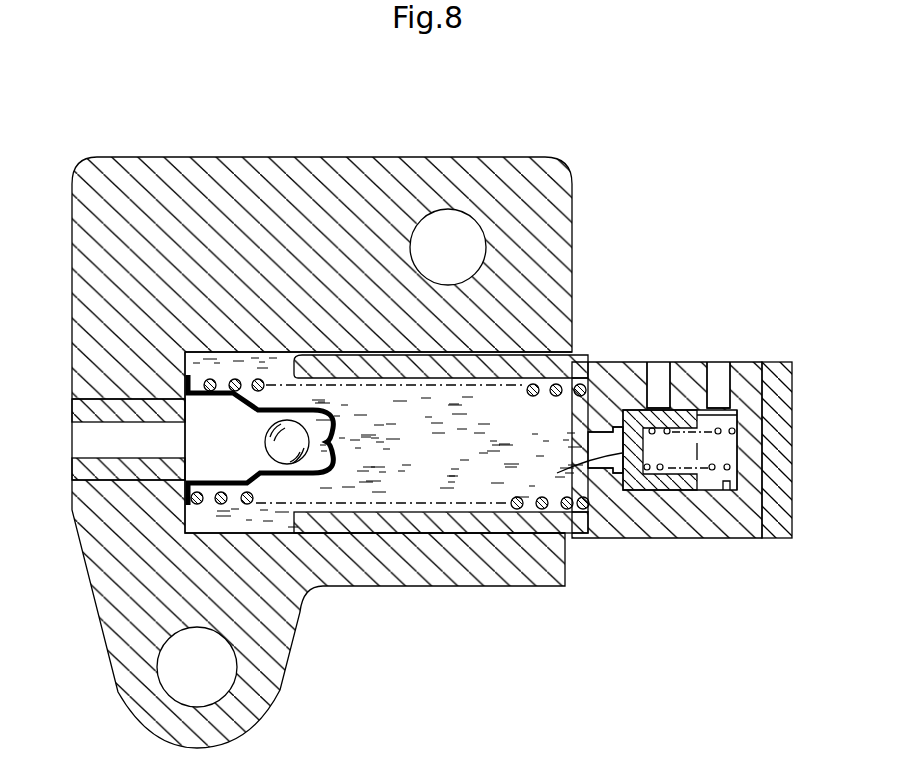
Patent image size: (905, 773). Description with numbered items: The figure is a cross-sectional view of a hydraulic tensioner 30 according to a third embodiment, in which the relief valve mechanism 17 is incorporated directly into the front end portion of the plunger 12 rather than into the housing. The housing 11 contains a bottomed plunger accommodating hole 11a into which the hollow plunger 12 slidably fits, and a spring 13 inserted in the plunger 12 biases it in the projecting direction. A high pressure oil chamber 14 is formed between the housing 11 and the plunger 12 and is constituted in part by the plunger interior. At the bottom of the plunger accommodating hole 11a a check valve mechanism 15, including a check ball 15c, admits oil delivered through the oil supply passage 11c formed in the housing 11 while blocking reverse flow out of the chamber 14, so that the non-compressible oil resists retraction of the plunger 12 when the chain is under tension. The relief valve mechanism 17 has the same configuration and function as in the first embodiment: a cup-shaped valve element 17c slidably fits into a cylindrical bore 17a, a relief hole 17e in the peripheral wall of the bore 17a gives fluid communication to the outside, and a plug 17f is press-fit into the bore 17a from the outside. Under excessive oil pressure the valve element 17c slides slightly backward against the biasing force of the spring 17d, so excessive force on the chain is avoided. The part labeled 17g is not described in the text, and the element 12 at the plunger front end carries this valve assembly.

The housing 11 is at (237, 190).
The plunger accommodating hole 11a is at (575, 360).
The oil supply passage 11c is at (92, 435).
The plunger 12 is at (635, 523).
The spring 13 is at (512, 509).
The high pressure oil chamber 14 is at (427, 473).
The check valve mechanism 15 is at (338, 447).
The check ball 15c is at (287, 462).
The relief valve mechanism 17 is at (702, 448).
The cylindrical bore 17a is at (738, 492).
The valve element 17c is at (737, 418).
The spring 17d is at (714, 491).
The relief hole 17e is at (660, 362).
The plug 17f is at (775, 362).
The relief port 17g is at (717, 362).
The tensioner 30 is at (580, 210).